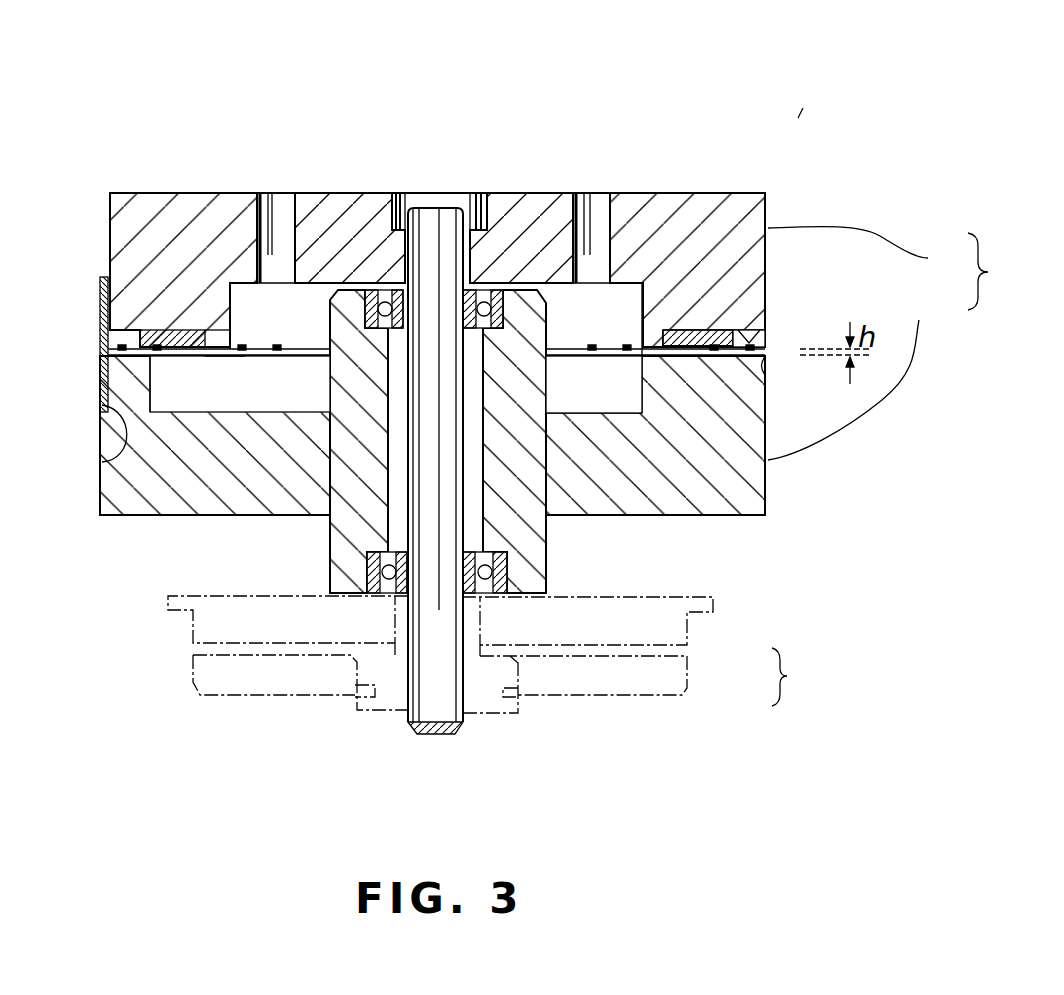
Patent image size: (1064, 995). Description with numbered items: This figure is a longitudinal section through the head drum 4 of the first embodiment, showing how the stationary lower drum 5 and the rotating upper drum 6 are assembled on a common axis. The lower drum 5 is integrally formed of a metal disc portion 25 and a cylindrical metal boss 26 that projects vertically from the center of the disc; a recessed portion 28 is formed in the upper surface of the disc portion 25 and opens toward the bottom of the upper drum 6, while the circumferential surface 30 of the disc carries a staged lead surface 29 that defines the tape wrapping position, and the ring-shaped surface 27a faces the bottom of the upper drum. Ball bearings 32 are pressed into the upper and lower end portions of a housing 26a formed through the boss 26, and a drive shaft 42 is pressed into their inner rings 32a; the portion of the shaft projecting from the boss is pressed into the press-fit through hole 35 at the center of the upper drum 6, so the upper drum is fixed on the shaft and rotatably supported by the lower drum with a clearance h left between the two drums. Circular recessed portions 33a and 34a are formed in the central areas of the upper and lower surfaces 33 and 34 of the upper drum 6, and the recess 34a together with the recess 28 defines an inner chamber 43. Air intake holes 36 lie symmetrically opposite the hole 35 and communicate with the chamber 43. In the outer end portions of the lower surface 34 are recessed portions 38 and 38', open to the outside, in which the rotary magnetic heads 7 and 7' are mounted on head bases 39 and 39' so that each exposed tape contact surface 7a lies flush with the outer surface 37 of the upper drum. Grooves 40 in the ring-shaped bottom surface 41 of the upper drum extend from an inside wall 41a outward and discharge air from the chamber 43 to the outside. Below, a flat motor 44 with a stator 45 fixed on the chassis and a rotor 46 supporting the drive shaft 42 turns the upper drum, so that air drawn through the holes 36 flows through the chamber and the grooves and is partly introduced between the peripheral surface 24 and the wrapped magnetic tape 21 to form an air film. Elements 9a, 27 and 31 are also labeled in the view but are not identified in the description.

The head drum 4 is at (798, 118).
The lower drum 5 is at (745, 520).
The upper drum 6 is at (798, 182).
The rotary magnetic head 7 is at (406, 381).
The rotary magnetic head 7' is at (782, 387).
The tape contact surface 7a is at (768, 338).
The lower block side portion 9a is at (100, 470).
The magnetic tape 21 is at (100, 292).
The peripheral surface 24 is at (999, 271).
The metal disc portion 25 is at (130, 515).
The cylindrical metal boss 26 is at (323, 392).
The housing 26a is at (330, 560).
The upper right body 27 is at (645, 283).
The ring-shaped surface 27a is at (128, 265).
The recessed portion 28 is at (640, 414).
The lead surface 29 is at (104, 430).
The circumferential surface 30 is at (869, 370).
The chamber 31 is at (150, 378).
The ball bearings 32 is at (505, 290).
The inner rings 32a is at (400, 288).
The upper surface 33 is at (250, 193).
The circular recessed portion 33a is at (478, 200).
The lower surface 34 is at (225, 356).
The circular recessed portion 34a is at (340, 283).
The press-fit through hole 35 is at (428, 206).
The air intake holes 36 is at (283, 193).
The outer surface 37 is at (868, 248).
The recessed portion 38 is at (102, 286).
The recessed portion 38' is at (755, 238).
The head base 39 is at (185, 248).
The head base 39' is at (698, 249).
The grooves 40 is at (268, 347).
The ring-shaped surface 41 is at (692, 360).
The inside wall 41a is at (568, 347).
The drive shaft 42 is at (436, 735).
The inner chamber 43 is at (292, 397).
The flat motor 44 is at (802, 677).
The stator 45 is at (688, 640).
The rotor 46 is at (688, 690).